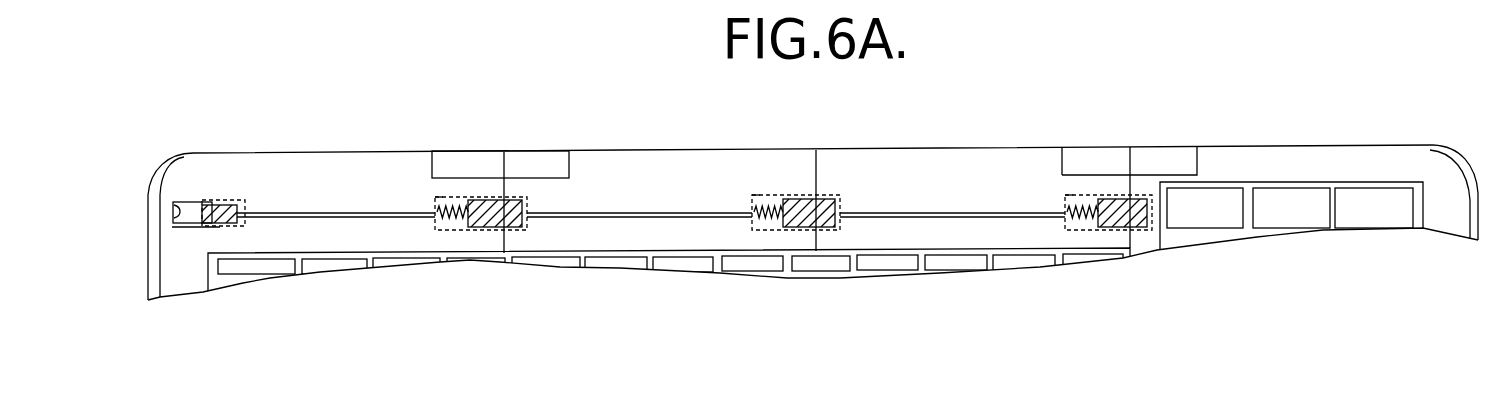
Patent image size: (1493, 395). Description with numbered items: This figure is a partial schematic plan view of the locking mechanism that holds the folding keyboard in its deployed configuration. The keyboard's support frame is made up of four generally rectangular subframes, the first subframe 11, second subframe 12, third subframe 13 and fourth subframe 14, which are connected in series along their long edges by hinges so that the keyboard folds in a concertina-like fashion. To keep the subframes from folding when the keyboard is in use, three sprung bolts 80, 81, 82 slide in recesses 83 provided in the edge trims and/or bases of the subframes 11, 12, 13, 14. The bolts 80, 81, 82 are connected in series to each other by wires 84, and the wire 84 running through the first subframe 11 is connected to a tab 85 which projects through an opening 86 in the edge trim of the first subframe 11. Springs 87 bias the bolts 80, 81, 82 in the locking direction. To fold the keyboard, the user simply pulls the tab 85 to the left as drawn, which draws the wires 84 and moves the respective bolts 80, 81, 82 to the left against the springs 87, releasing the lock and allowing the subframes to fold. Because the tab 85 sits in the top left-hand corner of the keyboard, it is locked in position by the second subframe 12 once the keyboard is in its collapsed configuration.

The first subframe 11 is at (188, 251).
The second subframe 12 is at (603, 157).
The third subframe 13 is at (958, 170).
The fourth subframe 14 is at (1266, 160).
The sprung bolt 80 is at (490, 210).
The sprung bolt 81 is at (800, 210).
The sprung bolt 82 is at (1115, 210).
The recess 83 is at (437, 198).
The wire 84 is at (312, 213).
The tab 85 is at (208, 207).
The opening 86 is at (176, 205).
The spring 87 is at (455, 218).